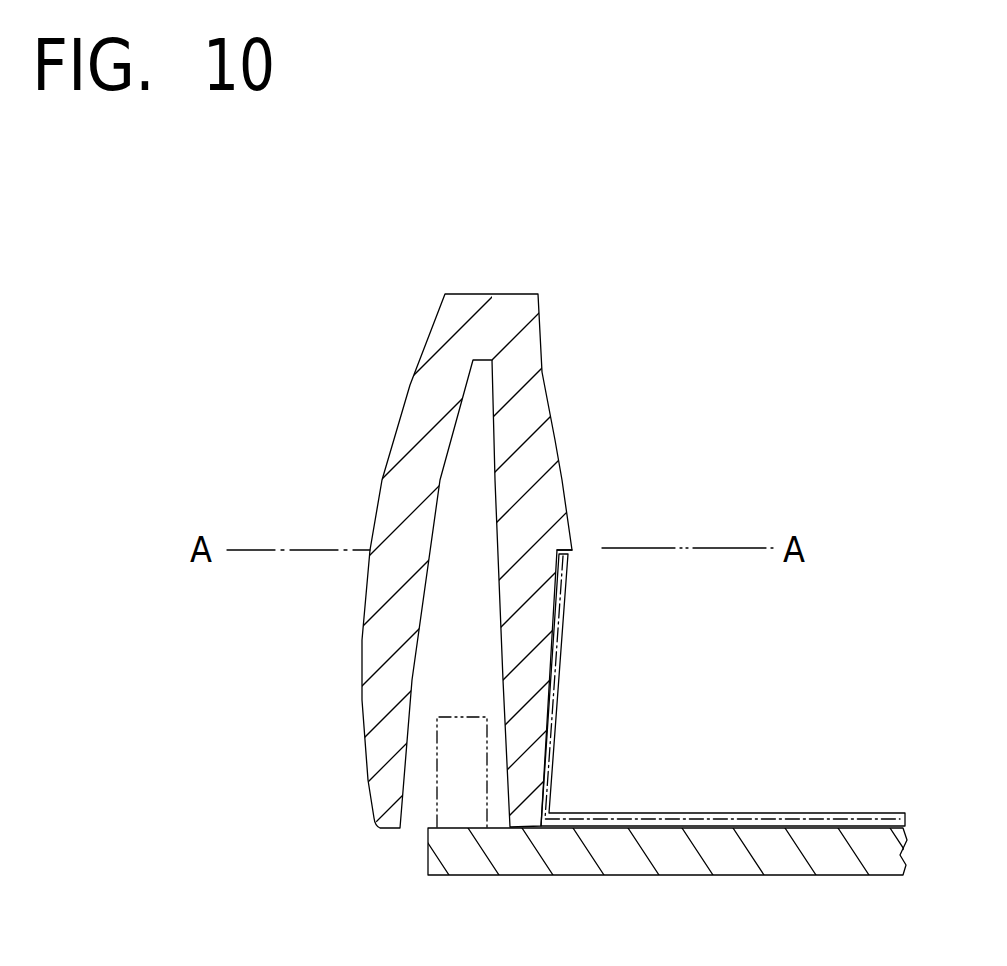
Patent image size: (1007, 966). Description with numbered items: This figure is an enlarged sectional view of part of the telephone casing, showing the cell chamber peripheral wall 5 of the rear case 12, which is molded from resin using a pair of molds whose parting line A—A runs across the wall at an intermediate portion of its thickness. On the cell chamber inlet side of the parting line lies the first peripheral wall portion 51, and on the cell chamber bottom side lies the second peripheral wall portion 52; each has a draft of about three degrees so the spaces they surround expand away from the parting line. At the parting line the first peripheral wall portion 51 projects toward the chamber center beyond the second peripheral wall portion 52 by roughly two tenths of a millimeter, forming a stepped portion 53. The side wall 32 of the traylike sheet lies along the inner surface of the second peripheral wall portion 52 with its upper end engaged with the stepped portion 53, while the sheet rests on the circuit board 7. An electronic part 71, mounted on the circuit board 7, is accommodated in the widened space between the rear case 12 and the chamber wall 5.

The cell chamber peripheral wall 5 is at (540, 372).
The rear case 12 is at (408, 385).
The first peripheral wall portion 51 is at (547, 442).
The second peripheral wall portion 52 is at (543, 681).
The stepped portion 53 is at (583, 558).
The side wall 32 is at (565, 628).
The electronic part 71 is at (437, 791).
The circuit board 7 is at (632, 857).